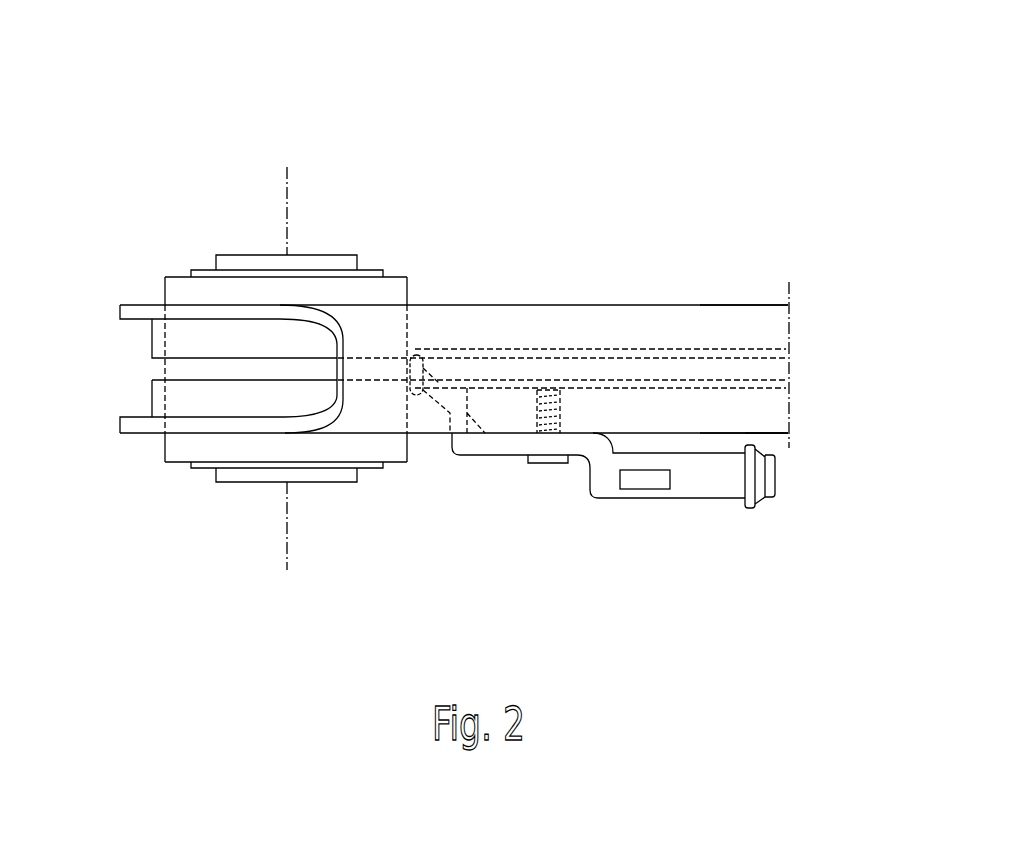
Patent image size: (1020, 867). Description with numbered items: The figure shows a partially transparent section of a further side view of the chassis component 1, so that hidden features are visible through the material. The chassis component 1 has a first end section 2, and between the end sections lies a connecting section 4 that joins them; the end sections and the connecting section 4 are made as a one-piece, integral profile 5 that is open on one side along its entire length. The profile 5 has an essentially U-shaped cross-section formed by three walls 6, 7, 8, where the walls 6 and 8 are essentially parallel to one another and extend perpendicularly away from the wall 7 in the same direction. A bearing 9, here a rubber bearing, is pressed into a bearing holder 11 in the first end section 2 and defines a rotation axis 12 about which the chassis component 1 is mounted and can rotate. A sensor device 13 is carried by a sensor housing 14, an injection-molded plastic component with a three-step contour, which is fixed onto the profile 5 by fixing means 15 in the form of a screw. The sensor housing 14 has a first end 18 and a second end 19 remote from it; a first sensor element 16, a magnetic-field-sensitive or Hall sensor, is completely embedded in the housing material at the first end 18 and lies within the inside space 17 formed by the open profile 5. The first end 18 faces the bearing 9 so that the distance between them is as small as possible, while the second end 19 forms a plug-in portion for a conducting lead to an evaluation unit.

The chassis component 1 is at (713, 117).
The first end section 2 is at (441, 146).
The connecting section 4 is at (731, 266).
The profile 5 is at (632, 267).
The wall 6 is at (777, 437).
The wall 7 is at (770, 331).
The wall 8 is at (776, 296).
The bearing 9 is at (197, 490).
The bearing holder 11 is at (147, 368).
The rotation axis 12 is at (285, 178).
The sensor device 13 is at (425, 557).
The sensor housing 14 is at (593, 498).
The fixing means 15 is at (548, 460).
The first sensor element 16 is at (419, 347).
The inside space 17 is at (512, 345).
The first end 18 is at (419, 402).
The second end 19 is at (733, 528).